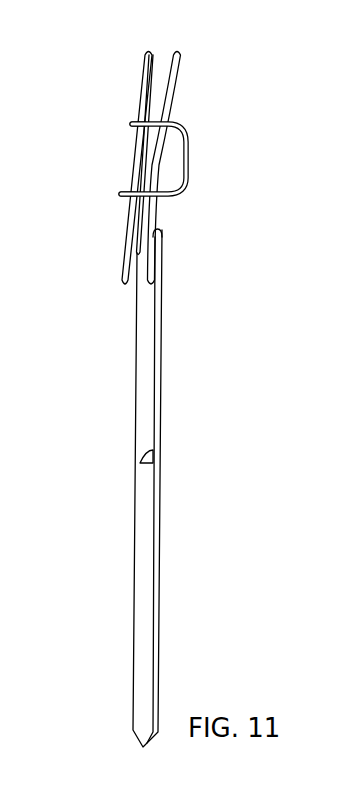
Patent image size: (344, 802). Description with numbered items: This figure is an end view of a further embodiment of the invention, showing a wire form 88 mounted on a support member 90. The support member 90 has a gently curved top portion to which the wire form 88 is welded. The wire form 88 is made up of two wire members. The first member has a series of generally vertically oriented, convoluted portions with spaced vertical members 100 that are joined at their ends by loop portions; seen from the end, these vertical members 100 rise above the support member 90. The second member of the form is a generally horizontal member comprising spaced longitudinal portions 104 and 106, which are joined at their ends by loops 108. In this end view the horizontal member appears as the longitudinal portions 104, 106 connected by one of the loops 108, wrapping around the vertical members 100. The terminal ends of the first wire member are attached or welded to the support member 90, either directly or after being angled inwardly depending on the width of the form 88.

The wire form 88 is at (186, 44).
The support member 90 is at (162, 365).
The vertical members 100 is at (134, 160).
The longitudinal portion 104 is at (132, 122).
The longitudinal portion 106 is at (122, 195).
The loops 108 is at (189, 142).